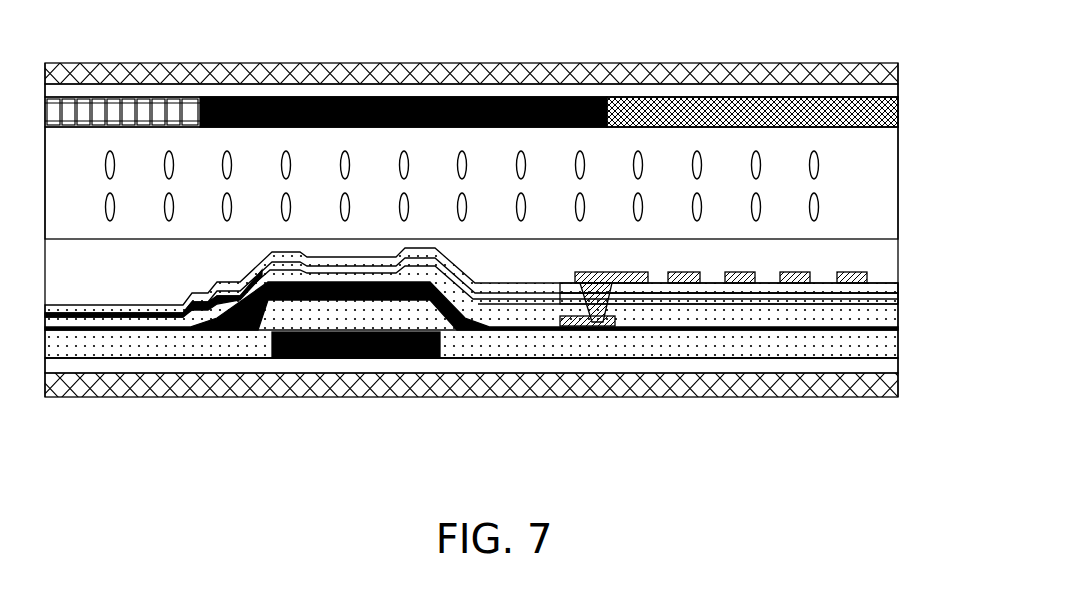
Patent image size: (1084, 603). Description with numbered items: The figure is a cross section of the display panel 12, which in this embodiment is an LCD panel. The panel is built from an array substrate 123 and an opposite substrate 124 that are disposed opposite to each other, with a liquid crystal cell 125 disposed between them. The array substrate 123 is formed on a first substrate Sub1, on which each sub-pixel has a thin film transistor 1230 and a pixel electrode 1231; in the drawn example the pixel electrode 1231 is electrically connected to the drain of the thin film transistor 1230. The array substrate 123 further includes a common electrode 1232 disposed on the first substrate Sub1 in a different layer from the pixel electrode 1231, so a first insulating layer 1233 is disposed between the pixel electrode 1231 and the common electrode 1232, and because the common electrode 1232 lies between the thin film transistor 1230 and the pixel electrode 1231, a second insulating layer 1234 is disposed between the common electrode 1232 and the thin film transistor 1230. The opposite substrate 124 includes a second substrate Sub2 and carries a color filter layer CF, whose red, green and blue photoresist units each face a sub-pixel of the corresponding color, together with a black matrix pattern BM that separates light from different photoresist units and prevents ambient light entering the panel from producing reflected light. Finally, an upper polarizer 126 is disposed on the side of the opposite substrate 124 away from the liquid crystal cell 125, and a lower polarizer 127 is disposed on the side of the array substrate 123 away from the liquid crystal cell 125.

The display panel 12 is at (77, 23).
The upper polarizer 126 is at (305, 78).
The second substrate Sub2 is at (411, 92).
The black matrix pattern BM is at (530, 98).
The color filter layer CF is at (675, 125).
The opposite substrate 124 is at (905, 80).
The liquid crystal cell 125 is at (870, 190).
The array substrate 123 is at (900, 240).
The thin film transistor 1230 is at (545, 318).
The lower polarizer 127 is at (498, 385).
The first substrate Sub1 is at (606, 365).
The second insulating layer 1234 is at (693, 316).
The common electrode 1232 is at (745, 299).
The first insulating layer 1233 is at (797, 286).
The pixel electrode 1231 is at (852, 283).